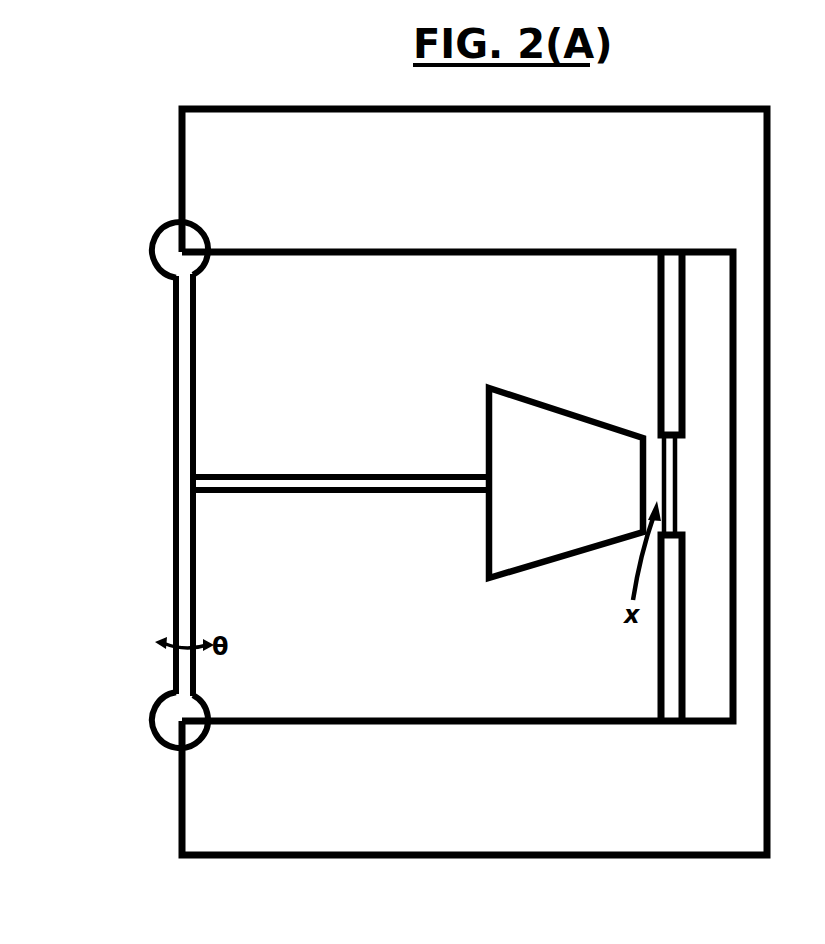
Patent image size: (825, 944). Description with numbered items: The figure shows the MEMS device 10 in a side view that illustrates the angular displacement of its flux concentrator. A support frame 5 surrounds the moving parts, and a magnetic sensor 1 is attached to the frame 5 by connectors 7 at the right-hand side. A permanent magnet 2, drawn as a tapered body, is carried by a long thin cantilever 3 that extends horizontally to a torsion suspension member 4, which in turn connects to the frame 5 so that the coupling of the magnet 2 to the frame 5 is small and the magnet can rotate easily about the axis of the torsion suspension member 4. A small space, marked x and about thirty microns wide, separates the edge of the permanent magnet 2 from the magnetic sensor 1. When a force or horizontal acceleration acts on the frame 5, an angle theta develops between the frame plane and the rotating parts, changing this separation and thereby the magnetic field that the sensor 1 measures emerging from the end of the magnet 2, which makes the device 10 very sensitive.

The magnetic sensor 1 is at (672, 463).
The permanent magnet 2 is at (550, 543).
The cantilever 3 is at (368, 488).
The torsion suspension member 4 is at (180, 396).
The support frame 5 is at (200, 175).
The connectors 7 is at (672, 362).
The MEMS device 10 is at (145, 775).